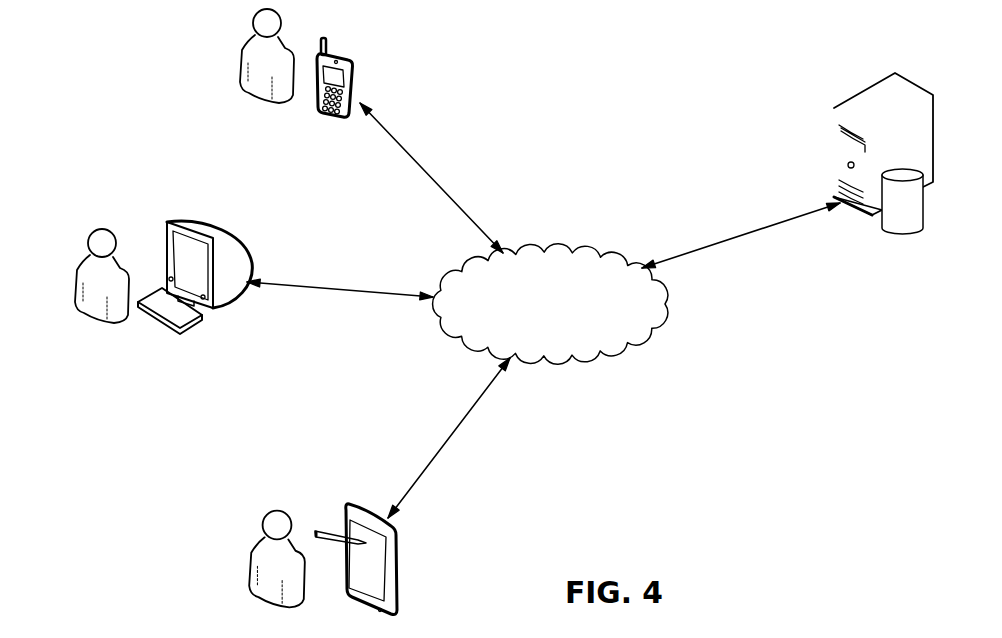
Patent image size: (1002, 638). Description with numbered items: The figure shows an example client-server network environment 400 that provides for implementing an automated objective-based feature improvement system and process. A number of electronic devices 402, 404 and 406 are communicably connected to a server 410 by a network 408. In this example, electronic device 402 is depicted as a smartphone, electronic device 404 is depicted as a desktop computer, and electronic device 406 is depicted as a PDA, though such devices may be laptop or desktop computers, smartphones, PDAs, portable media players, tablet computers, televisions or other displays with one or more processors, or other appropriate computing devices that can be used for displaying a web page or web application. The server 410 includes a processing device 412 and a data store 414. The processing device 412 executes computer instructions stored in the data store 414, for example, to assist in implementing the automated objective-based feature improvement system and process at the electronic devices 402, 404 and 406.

The network environment 400 is at (668, 33).
The electronic device 402 is at (410, 133).
The electronic device 404 is at (222, 232).
The electronic device 406 is at (412, 486).
The network 408 is at (550, 291).
The server 410 is at (840, 228).
The processing device 412 is at (903, 128).
The data store 414 is at (933, 210).